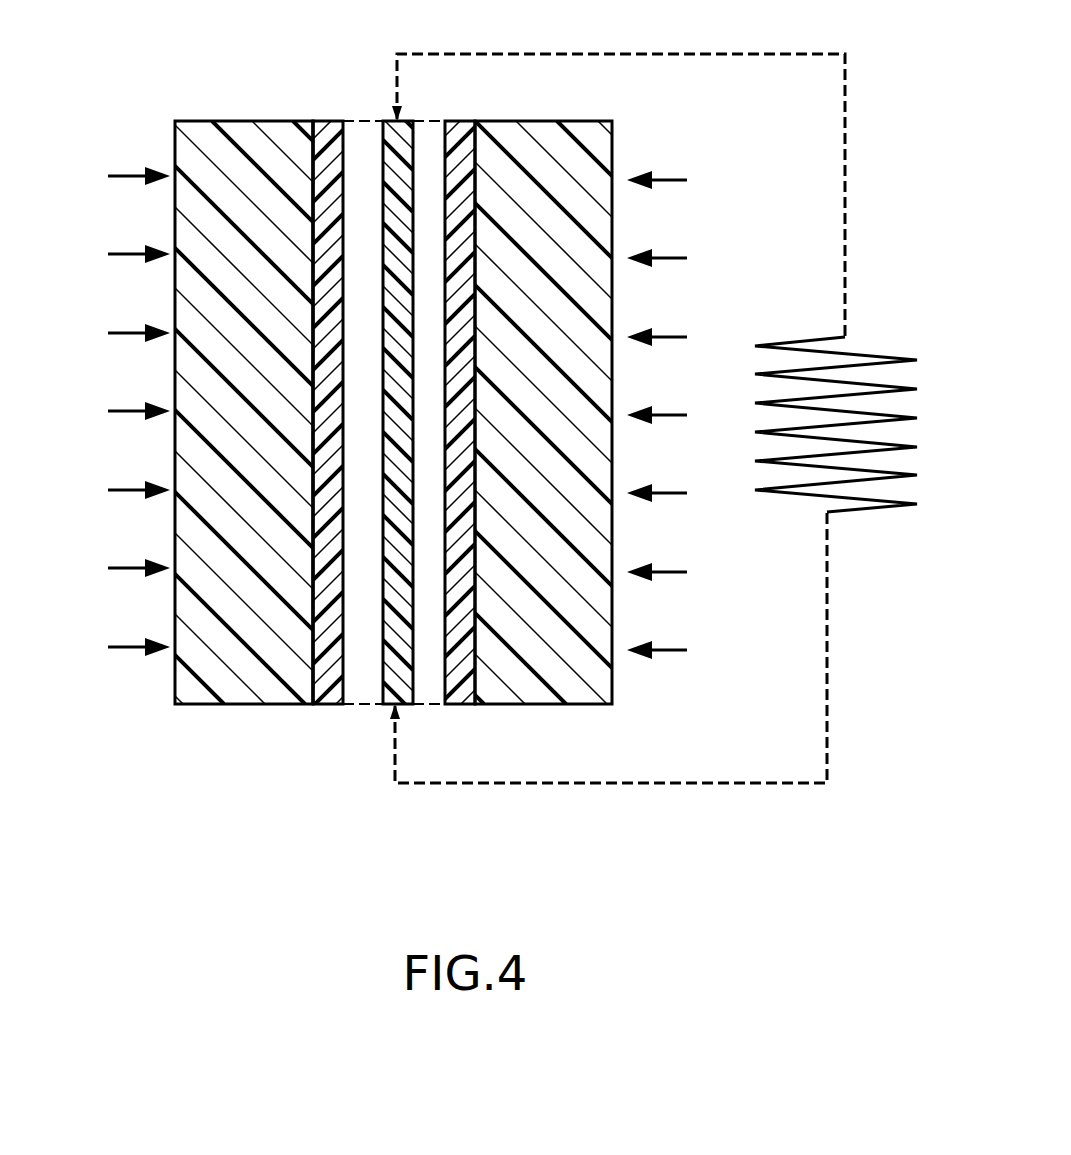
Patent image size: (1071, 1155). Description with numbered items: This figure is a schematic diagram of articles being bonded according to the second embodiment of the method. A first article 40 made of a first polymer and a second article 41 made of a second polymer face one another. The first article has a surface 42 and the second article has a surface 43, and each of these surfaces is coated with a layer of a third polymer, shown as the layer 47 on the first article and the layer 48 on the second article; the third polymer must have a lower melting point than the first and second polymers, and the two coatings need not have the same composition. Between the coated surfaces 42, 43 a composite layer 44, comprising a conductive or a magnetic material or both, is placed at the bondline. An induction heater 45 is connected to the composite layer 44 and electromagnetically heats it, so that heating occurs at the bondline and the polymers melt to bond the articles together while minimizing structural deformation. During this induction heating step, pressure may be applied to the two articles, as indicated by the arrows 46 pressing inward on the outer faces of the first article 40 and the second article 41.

The first article 40 is at (213, 120).
The second article 41 is at (570, 121).
The surface of first article 42 is at (315, 120).
The surface of second article 43 is at (476, 121).
The composite layer 44 is at (407, 119).
The induction heater 45 is at (872, 356).
The arrows 46 is at (108, 332).
The layer of third polymer 47 is at (330, 120).
The layer of third polymer 48 is at (472, 121).